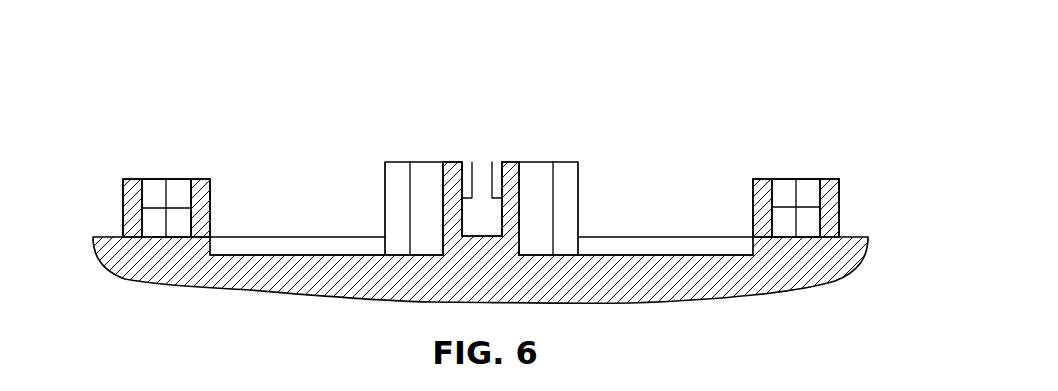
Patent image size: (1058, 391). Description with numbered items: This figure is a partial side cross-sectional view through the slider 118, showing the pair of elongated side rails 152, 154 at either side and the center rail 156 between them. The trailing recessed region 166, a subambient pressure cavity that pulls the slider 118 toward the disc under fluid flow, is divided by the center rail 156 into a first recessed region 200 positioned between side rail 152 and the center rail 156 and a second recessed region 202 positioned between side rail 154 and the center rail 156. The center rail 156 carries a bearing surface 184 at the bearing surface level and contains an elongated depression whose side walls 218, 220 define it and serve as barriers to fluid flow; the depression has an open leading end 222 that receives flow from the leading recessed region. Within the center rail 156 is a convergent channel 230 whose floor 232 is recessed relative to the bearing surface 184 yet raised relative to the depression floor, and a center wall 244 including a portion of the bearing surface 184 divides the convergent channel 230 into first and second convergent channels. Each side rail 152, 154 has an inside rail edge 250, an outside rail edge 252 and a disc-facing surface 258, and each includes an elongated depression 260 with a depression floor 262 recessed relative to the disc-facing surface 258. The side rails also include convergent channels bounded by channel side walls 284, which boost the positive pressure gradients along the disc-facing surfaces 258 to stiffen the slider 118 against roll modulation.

The slider 118 is at (787, 82).
The side rail 152 is at (202, 134).
The side rail 154 is at (787, 148).
The center rail 156 is at (518, 119).
The trailing recessed region 166 is at (318, 253).
The bearing surface 184 is at (567, 160).
The first recessed region 200 is at (272, 253).
The second recessed region 202 is at (625, 250).
The side wall 218 is at (445, 222).
The side wall 220 is at (515, 182).
The leading end 222 is at (473, 232).
The convergent channel 230 is at (463, 136).
The floor 232 is at (470, 197).
The center wall 244 is at (482, 163).
The inside rail edge 250 is at (212, 195).
The outside rail edge 252 is at (123, 195).
The disc-facing surface 258 is at (131, 183).
The elongated depression 260 is at (183, 223).
The depression floor 262 is at (157, 232).
The channel side walls 284 is at (149, 193).